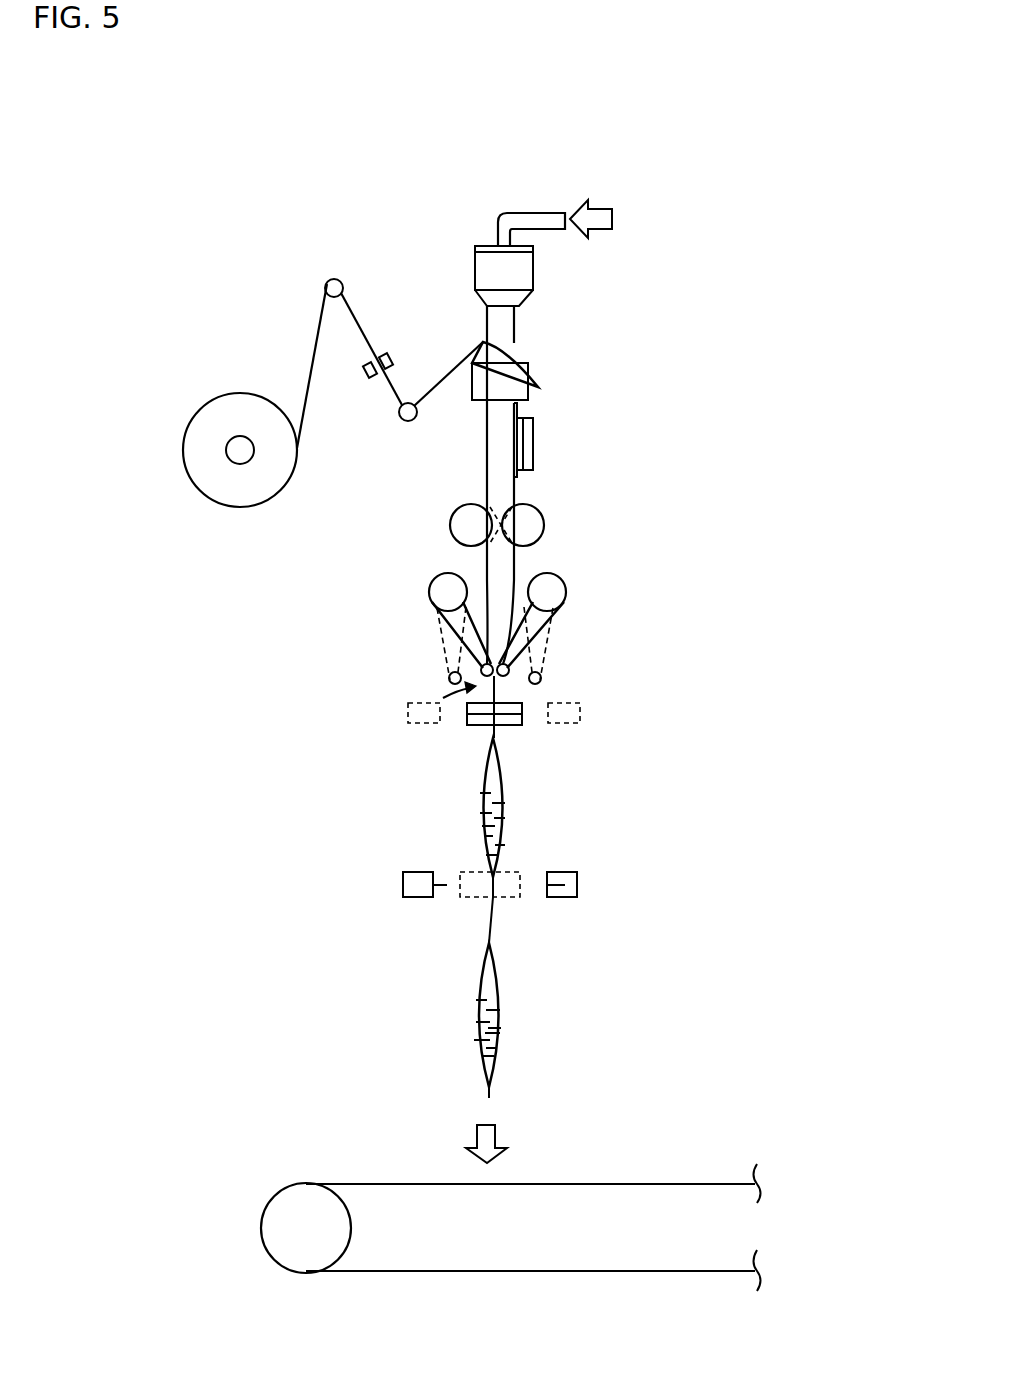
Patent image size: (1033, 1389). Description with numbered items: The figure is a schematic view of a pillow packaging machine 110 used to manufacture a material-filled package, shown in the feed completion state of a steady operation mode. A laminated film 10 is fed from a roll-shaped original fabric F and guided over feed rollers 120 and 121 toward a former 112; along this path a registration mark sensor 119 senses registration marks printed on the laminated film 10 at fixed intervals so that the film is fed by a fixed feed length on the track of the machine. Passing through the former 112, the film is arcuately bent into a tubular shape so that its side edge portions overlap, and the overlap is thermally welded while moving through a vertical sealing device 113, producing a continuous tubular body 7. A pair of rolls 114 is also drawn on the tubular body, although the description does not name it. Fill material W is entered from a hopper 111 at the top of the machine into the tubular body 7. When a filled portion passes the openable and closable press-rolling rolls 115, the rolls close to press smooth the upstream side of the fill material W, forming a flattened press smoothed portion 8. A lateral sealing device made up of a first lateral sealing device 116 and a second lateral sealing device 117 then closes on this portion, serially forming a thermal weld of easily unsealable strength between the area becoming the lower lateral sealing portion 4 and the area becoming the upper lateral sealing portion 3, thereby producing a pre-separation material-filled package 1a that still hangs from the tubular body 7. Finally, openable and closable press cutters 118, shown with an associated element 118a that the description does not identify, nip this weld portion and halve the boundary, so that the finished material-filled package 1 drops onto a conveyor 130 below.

The pillow packaging machine 110 is at (447, 250).
The hopper 111 is at (525, 268).
The former 112 is at (525, 373).
The vertical sealing device 113 is at (535, 437).
The tubular body 7 is at (507, 490).
The feed rollers 114 is at (457, 521).
The press-rolling rolls 115 is at (478, 658).
The first lateral sealing device 116 is at (522, 703).
The second lateral sealing device 117 is at (522, 726).
The press smoothed portion 8 is at (485, 706).
The pre-separation material-filled package 1a is at (477, 800).
The fill material W is at (505, 826).
The press cutters 118 is at (403, 883).
The sensor lead 118a is at (446, 888).
The upper lateral sealing portion 3 is at (490, 932).
The material-filled package 1 is at (507, 1000).
The lower lateral sealing portion 4 is at (490, 1092).
The conveyor 130 is at (457, 1272).
The roll-shaped original fabric F is at (235, 507).
The laminated film 10 is at (315, 335).
The registration mark sensor 119 is at (364, 380).
The feed roller 120 is at (338, 278).
The feed roller 121 is at (407, 424).